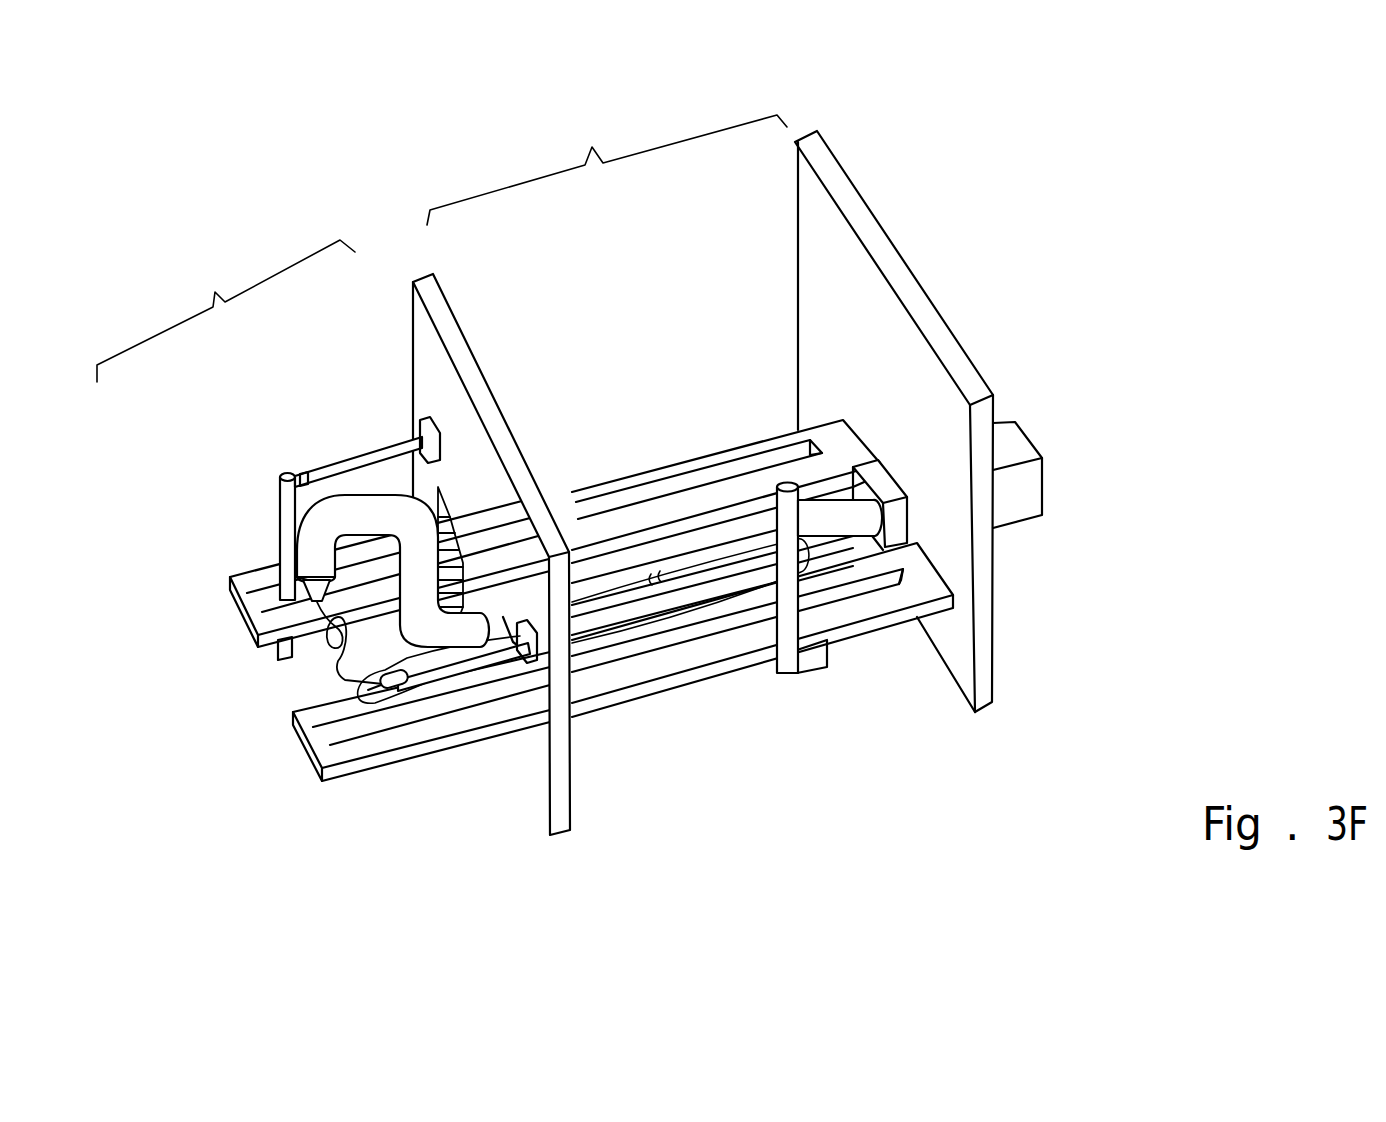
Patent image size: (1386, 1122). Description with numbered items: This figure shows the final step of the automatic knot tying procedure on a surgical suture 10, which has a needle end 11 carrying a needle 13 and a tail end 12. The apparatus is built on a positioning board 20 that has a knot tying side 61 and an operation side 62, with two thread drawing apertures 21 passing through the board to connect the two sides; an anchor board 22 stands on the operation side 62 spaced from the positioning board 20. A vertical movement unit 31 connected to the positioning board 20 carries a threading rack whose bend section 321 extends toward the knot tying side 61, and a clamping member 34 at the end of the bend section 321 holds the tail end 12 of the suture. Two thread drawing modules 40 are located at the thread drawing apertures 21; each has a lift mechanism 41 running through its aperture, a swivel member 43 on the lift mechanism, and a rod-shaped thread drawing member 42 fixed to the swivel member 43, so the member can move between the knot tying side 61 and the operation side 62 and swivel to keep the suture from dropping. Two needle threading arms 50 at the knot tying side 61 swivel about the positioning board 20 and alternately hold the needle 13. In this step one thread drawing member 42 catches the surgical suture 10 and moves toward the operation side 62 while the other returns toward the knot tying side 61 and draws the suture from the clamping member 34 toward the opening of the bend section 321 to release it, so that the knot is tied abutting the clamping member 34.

The surgical suture 10 is at (382, 695).
The needle end 11 is at (367, 688).
The tail end 12 is at (318, 600).
The needle 13 is at (389, 675).
The positioning board 20 is at (437, 300).
The thread drawing aperture 21 is at (443, 500).
The anchor board 22 is at (820, 155).
The vertical movement unit 31 is at (900, 517).
The bend section 321 is at (338, 528).
The clamping member 34 is at (300, 588).
The thread drawing module 40 is at (571, 563).
The lift mechanism 41 is at (685, 467).
The thread drawing member 42 is at (283, 475).
The swivel member 43 is at (287, 653).
The needle threading arm 50 is at (367, 460).
The knot tying side 61 is at (226, 311).
The operation side 62 is at (607, 170).